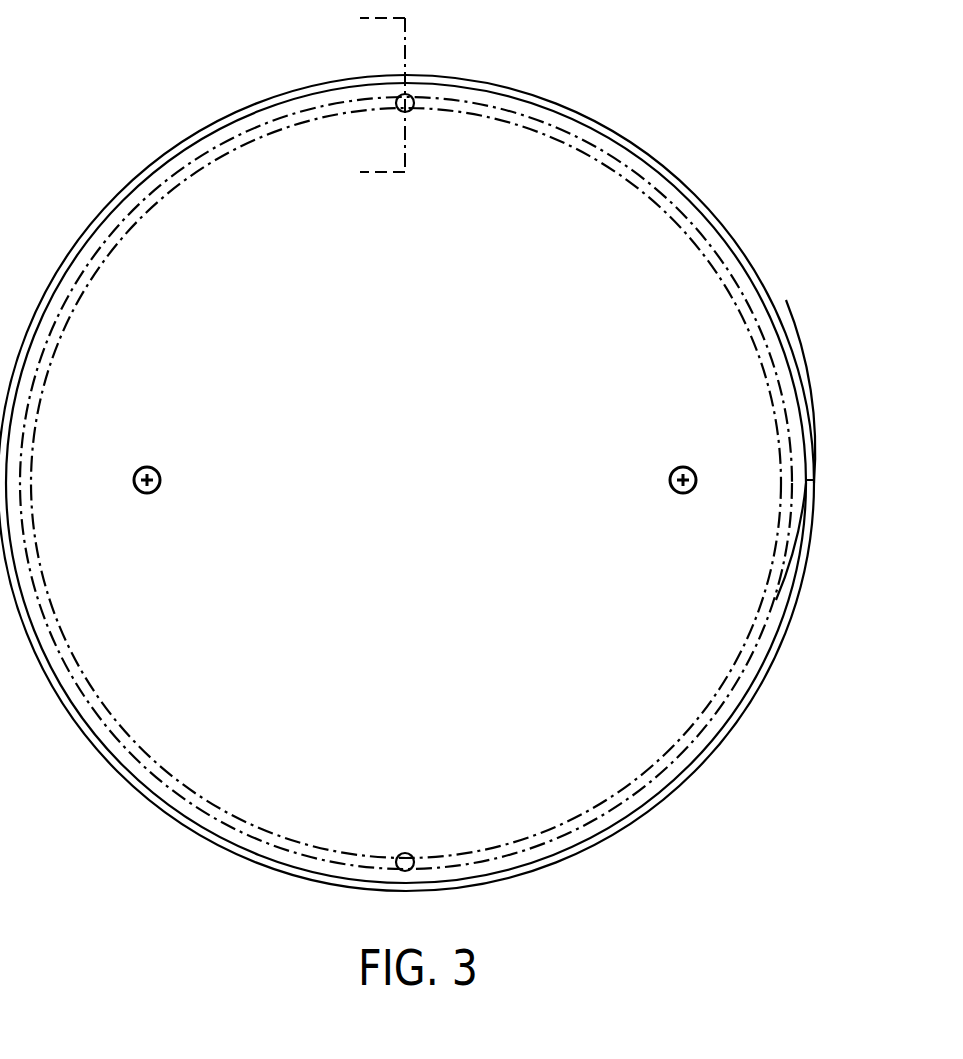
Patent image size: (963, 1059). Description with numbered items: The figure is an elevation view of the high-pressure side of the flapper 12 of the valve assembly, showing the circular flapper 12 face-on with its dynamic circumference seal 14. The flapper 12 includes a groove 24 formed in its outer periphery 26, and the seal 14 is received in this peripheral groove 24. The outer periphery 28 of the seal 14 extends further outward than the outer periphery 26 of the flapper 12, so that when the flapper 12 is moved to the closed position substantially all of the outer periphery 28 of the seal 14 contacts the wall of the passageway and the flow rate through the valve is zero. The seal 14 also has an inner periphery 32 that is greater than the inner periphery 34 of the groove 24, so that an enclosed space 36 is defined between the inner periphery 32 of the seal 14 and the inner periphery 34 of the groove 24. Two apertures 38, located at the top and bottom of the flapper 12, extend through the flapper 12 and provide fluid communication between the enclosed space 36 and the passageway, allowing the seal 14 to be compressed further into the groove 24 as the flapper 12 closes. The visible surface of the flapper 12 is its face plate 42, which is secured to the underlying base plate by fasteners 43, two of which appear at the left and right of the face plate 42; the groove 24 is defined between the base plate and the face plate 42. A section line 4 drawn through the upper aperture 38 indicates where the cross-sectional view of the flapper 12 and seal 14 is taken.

The flapper 12 is at (767, 210).
The seal 14 is at (642, 152).
The groove 24 is at (733, 301).
The outer periphery of the flapper 26 is at (805, 447).
The outer periphery of the seal 28 is at (800, 382).
The inner periphery of the seal 32 is at (793, 490).
The inner periphery of the groove 34 is at (777, 535).
The enclosed space 36 is at (758, 338).
The aperture 38 is at (416, 102).
The face plate 42 is at (415, 494).
The fasteners 43 is at (152, 469).
The section line 4- 4 is at (347, 18).